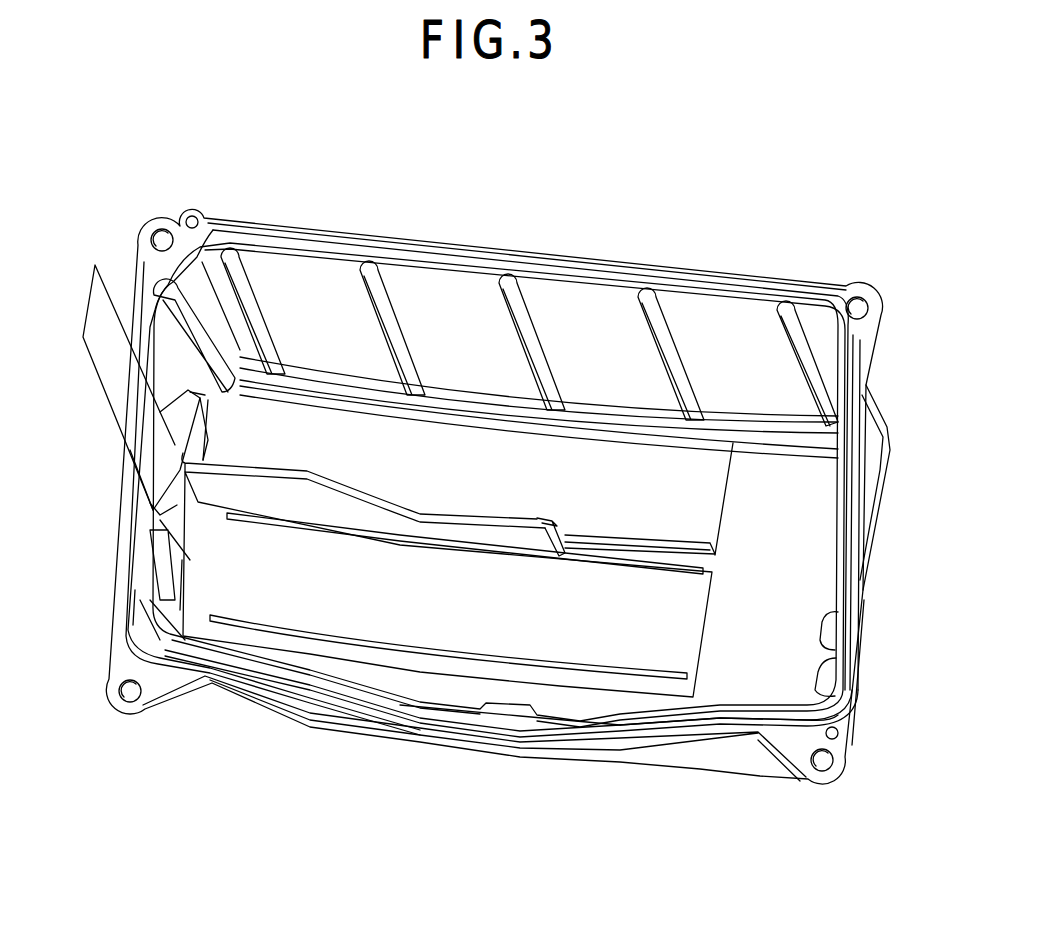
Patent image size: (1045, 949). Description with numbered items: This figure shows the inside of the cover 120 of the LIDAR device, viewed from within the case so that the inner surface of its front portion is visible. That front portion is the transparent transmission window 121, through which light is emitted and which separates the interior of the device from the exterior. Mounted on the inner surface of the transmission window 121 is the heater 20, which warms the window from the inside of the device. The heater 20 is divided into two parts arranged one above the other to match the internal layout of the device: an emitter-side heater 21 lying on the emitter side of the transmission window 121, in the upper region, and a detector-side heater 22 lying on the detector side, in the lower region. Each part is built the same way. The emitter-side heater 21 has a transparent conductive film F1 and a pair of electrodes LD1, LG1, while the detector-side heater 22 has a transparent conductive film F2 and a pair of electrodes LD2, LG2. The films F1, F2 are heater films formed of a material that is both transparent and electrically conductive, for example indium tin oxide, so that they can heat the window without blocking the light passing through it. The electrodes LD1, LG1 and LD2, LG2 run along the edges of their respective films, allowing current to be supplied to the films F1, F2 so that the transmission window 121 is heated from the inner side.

The cover 120 is at (626, 171).
The transmission window 121 is at (783, 663).
The heater 20 is at (415, 852).
The emitter-side heater 21 is at (397, 470).
The detector-side heater 22 is at (307, 588).
The transparent conductive film F1 is at (705, 477).
The transparent conductive film F2 is at (687, 600).
The electrode LD1 is at (473, 427).
The electrode LD2 is at (483, 660).
The electrode LG1 is at (622, 540).
The electrode LG2 is at (533, 562).